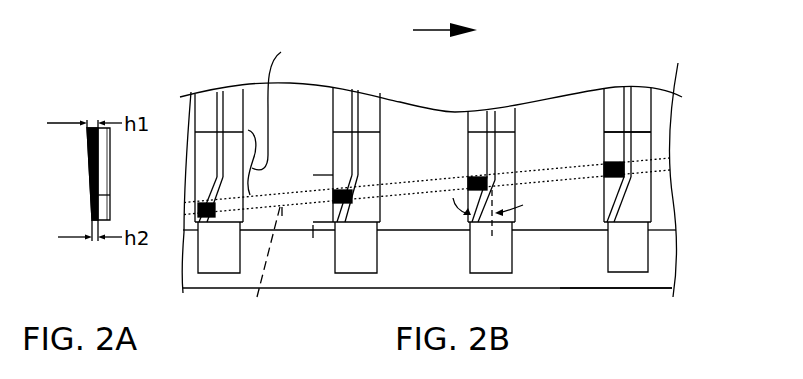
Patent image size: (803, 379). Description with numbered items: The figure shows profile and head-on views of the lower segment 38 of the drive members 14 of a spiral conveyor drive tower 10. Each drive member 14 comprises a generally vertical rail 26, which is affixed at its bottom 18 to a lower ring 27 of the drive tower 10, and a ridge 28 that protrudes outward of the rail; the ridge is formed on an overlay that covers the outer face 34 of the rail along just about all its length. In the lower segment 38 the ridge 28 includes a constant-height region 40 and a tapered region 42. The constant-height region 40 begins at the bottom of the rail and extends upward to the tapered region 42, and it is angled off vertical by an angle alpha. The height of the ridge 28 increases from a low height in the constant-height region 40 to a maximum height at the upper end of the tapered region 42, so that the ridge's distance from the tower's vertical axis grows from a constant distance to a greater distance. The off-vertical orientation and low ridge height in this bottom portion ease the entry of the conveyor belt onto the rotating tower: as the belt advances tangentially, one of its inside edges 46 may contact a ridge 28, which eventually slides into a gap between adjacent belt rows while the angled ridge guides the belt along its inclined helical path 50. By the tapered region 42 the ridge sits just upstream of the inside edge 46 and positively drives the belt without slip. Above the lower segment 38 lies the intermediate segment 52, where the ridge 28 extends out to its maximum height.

In FIG. 2B, the drive tower 10 is at (440, 287).
In FIG. 2A, the drive member 14 is at (108, 157).
In FIG. 2B, the drive member 14 is at (647, 205).
In FIG. 2B, the bottom 18 is at (392, 292).
In FIG. 2B, the rail 26 is at (645, 253).
In FIG. 2B, the lower ring 27 is at (583, 283).
In FIG. 2A, the ridge 28 is at (108, 195).
In FIG. 2B, the ridge 28 is at (630, 146).
In FIG. 2B, the outer face 34 is at (345, 232).
In FIG. 2B, the lower segment 38 is at (279, 118).
In FIG. 2A, the constant-height region 40 is at (92, 212).
In FIG. 2B, the constant-height region 40 is at (313, 172).
In FIG. 2A, the tapered region 42 is at (87, 152).
In FIG. 2B, the tapered region 42 is at (357, 152).
In FIG. 2B, the inside edge 46 is at (199, 213).
In FIG. 2B, the helical path 50 is at (258, 268).
In FIG. 2B, the intermediate segment 52 is at (640, 98).